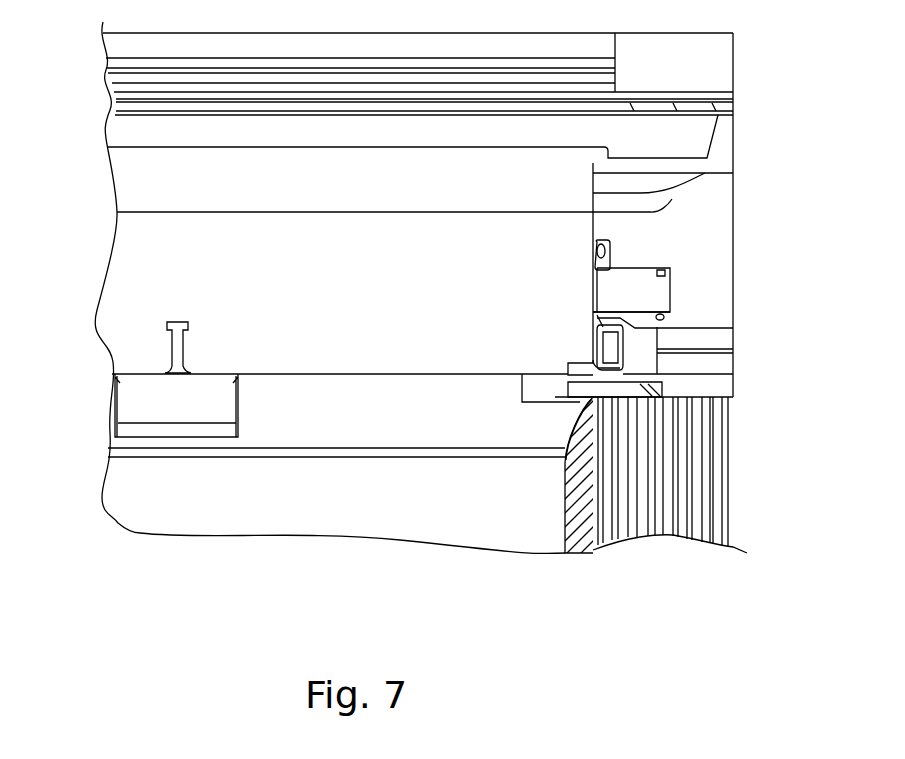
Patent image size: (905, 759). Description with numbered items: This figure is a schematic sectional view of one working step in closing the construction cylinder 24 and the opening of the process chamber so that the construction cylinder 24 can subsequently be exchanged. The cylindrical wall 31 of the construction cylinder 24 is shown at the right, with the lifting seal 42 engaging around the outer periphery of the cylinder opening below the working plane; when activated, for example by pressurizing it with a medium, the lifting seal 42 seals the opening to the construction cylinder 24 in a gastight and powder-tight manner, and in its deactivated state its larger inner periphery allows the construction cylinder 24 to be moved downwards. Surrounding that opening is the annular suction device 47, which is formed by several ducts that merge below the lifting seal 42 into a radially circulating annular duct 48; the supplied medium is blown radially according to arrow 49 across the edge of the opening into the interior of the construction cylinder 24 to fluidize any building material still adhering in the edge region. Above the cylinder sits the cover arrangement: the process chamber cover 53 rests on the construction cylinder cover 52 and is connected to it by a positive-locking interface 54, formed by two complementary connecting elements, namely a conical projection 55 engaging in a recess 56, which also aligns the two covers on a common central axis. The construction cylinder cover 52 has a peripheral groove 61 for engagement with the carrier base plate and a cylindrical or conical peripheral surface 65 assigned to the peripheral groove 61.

The construction cylinder 24 is at (130, 507).
The cylindrical wall 31 is at (575, 538).
The lifting seal 42 is at (612, 348).
The annular suction device 47 is at (713, 428).
The annular duct 48 is at (640, 391).
The arrow 49 is at (622, 380).
The construction cylinder cover 52 is at (112, 405).
The process chamber cover 53 is at (142, 247).
The positive-locking interface 54 is at (113, 362).
The conical projection 55 is at (138, 388).
The recess 56 is at (107, 443).
The peripheral groove 61 is at (548, 375).
The peripheral surface 65 is at (573, 427).